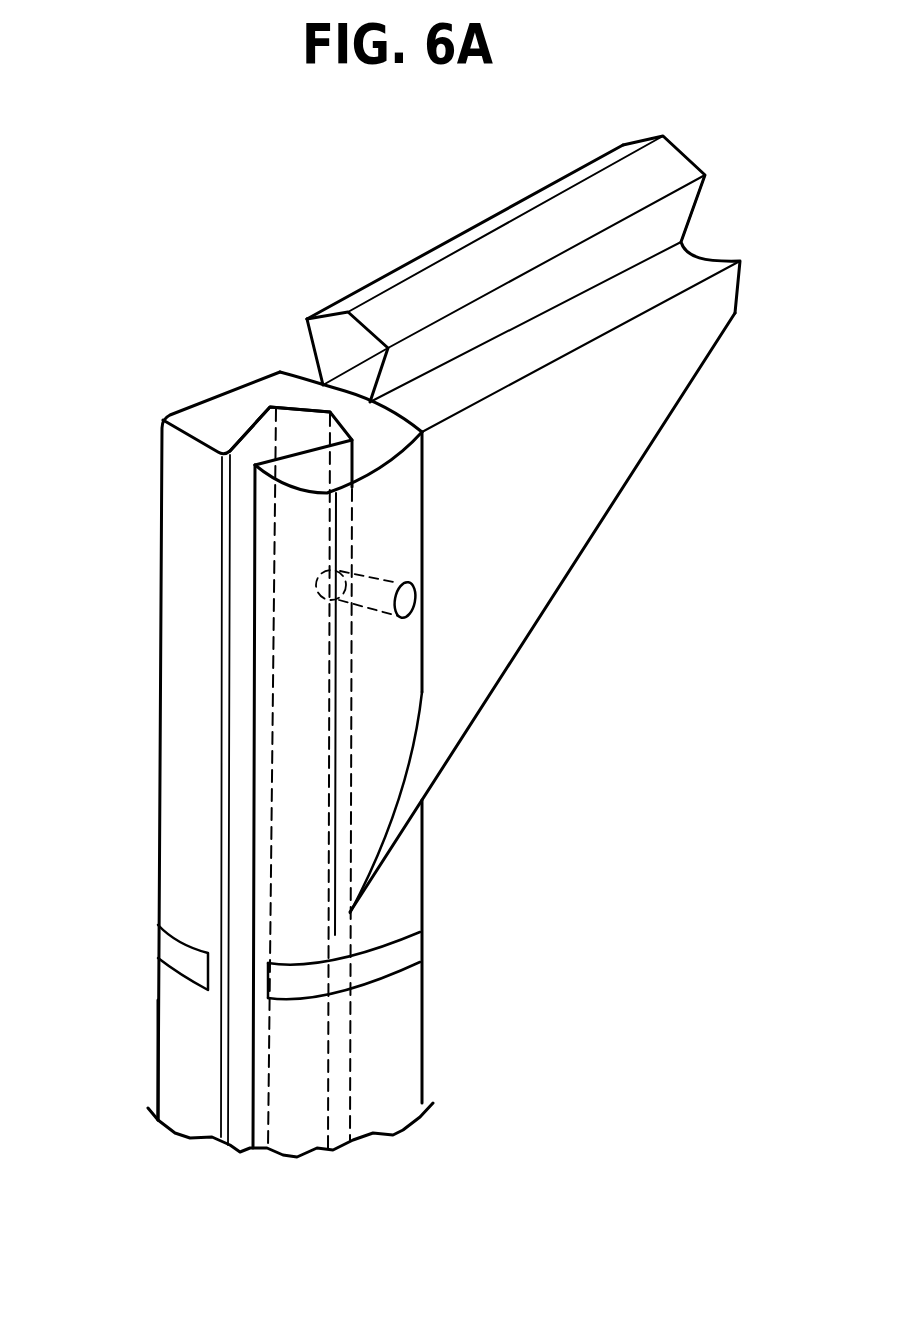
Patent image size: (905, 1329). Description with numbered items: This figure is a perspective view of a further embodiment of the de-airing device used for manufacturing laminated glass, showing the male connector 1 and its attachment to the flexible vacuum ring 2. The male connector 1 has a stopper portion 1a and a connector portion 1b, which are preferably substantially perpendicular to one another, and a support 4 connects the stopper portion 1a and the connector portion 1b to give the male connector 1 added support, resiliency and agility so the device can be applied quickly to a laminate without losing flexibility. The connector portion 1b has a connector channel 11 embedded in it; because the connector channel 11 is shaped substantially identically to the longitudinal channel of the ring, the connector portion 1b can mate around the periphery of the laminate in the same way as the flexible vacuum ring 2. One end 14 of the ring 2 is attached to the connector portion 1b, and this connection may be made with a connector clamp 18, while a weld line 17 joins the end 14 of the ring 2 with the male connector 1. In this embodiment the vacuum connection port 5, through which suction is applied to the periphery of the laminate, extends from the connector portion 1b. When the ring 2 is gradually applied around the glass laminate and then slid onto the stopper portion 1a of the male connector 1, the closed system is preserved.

The male connector 1 is at (755, 217).
The stopper portion 1a is at (668, 140).
The connector portion 1b is at (162, 433).
The flexible vacuum ring 2 is at (413, 1042).
The support 4 is at (580, 515).
The vacuum connection port 5 is at (413, 617).
The connector channel 11 is at (263, 443).
The end of ring 14 is at (158, 1020).
The weld line 17 is at (300, 375).
The connector clamp 18 is at (413, 948).